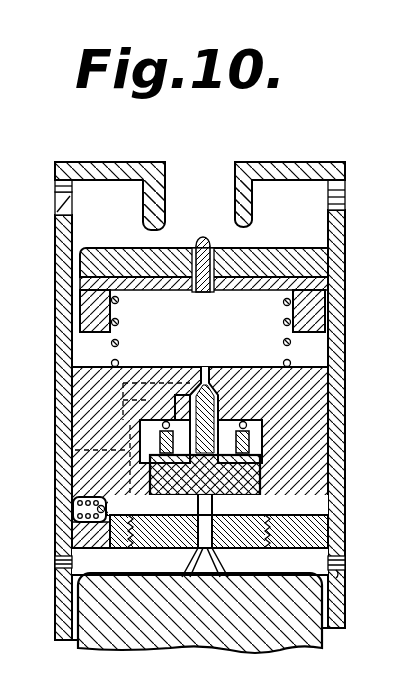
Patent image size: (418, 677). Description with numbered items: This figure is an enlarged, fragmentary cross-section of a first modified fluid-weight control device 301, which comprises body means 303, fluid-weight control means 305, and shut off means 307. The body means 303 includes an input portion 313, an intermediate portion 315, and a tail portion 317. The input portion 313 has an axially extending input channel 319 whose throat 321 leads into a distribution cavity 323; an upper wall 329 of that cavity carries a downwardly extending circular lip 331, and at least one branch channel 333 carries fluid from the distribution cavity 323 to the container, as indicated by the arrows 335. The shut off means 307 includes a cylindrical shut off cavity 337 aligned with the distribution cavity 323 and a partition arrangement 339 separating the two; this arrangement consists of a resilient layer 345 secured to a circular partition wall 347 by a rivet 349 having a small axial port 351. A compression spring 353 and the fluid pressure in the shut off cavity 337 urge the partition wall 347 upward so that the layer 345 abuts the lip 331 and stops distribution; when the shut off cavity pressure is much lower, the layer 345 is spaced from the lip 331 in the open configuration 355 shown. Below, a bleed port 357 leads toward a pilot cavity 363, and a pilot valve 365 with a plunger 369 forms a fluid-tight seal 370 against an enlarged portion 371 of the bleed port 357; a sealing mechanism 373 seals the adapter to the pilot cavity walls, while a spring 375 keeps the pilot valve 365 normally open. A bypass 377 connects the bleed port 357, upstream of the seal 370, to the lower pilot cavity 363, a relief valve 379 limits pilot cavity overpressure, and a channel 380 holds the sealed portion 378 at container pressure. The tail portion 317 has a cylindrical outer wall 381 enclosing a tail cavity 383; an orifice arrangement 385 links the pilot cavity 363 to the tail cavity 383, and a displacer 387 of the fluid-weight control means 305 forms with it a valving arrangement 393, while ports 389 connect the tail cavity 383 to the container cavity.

The fluid-weight control device 301 is at (298, 153).
The body means 303 is at (210, 423).
The fluid-weight control means 305 is at (374, 532).
The shut off means 307 is at (241, 260).
The input portion 313 is at (248, 162).
The intermediate portion 315 is at (340, 473).
The tail portion 317 is at (345, 605).
The input channel 319 is at (173, 168).
The throat 321 is at (200, 180).
The distribution cavity 323 is at (300, 208).
The upper wall 329 is at (92, 182).
The lip 331 is at (146, 228).
The branch channel 333 is at (58, 185).
The arrows 335 is at (50, 215).
The shut off cavity 337 is at (213, 334).
The partition arrangement 339 is at (44, 277).
The layer 345 is at (330, 264).
The partition wall 347 is at (190, 293).
The rivet 349 is at (217, 293).
The port 351 is at (200, 237).
The spring 353 is at (291, 342).
The open configuration 355 is at (40, 369).
The bleed port 357 is at (204, 366).
The pilot cavity 363 is at (262, 499).
The pilot valve 365 is at (208, 360).
The plunger 369 is at (218, 403).
The fluid-tight seal 370 is at (195, 400).
The enlarged portion 371 is at (213, 386).
The sealing mechanism 373 is at (148, 461).
The spring 375 is at (136, 424).
The bypass 377 is at (57, 462).
The portion 378 is at (262, 424).
The relief valve 379 is at (72, 532).
The channel 380 is at (300, 428).
The outer wall 381 is at (57, 628).
The tail cavity 383 is at (83, 567).
The orifice arrangement 385 is at (227, 563).
The displacer 387 is at (322, 640).
The ports 389 is at (346, 567).
The valving arrangement 393 is at (179, 563).